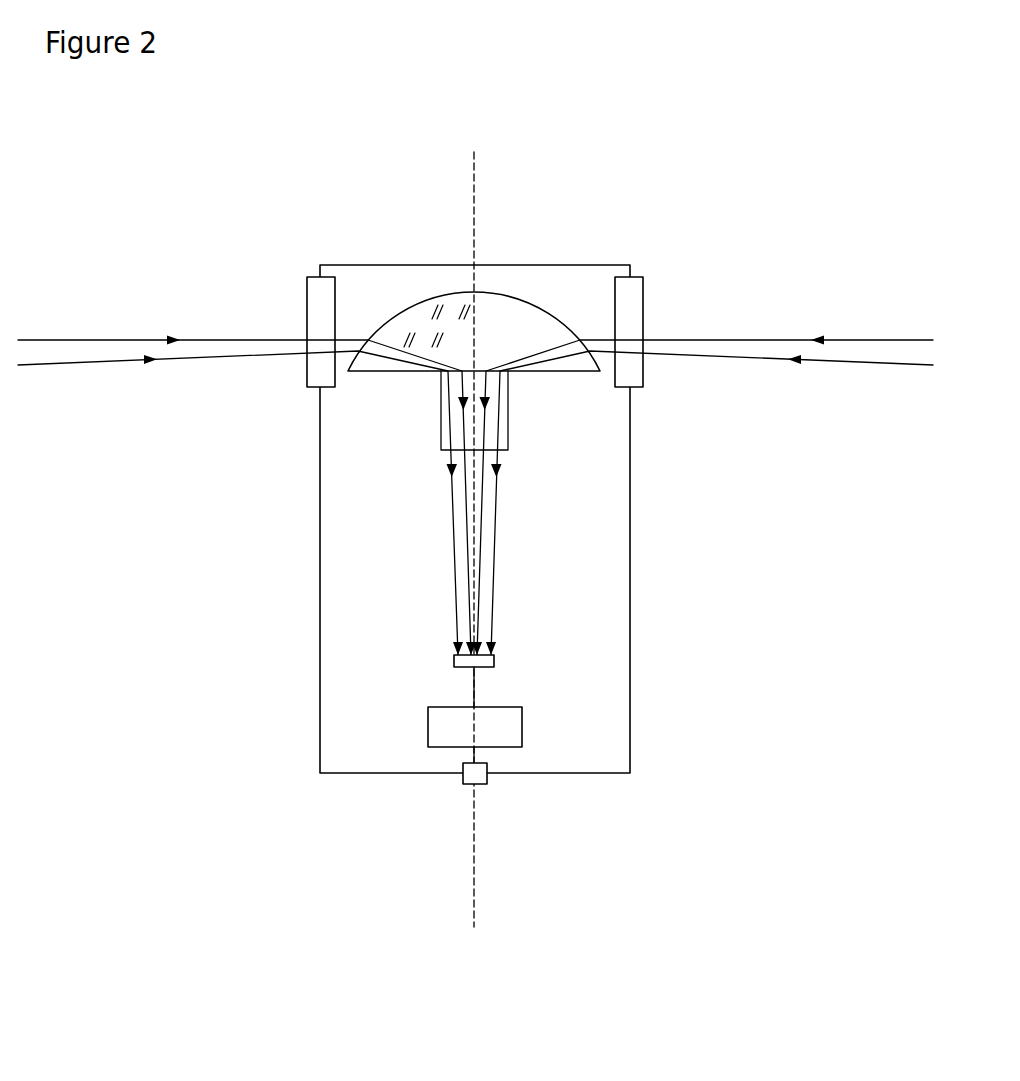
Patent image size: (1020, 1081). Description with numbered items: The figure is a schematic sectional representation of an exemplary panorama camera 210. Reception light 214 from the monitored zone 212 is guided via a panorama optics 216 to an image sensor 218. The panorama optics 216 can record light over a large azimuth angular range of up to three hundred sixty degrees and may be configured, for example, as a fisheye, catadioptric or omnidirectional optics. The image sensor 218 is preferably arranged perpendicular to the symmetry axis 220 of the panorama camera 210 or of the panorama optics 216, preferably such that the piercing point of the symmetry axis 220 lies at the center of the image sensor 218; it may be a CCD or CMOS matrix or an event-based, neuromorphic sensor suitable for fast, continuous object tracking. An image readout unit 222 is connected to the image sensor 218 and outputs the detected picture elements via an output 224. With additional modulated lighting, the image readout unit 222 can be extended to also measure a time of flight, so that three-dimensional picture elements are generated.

The panorama camera 210 is at (728, 230).
The monitored zone 212 is at (67, 302).
The reception light 214 is at (90, 368).
The panorama optics 216 is at (480, 332).
The image sensor 218 is at (481, 669).
The symmetry axis 220 is at (475, 225).
The image readout unit 222 is at (440, 737).
The output 224 is at (470, 787).